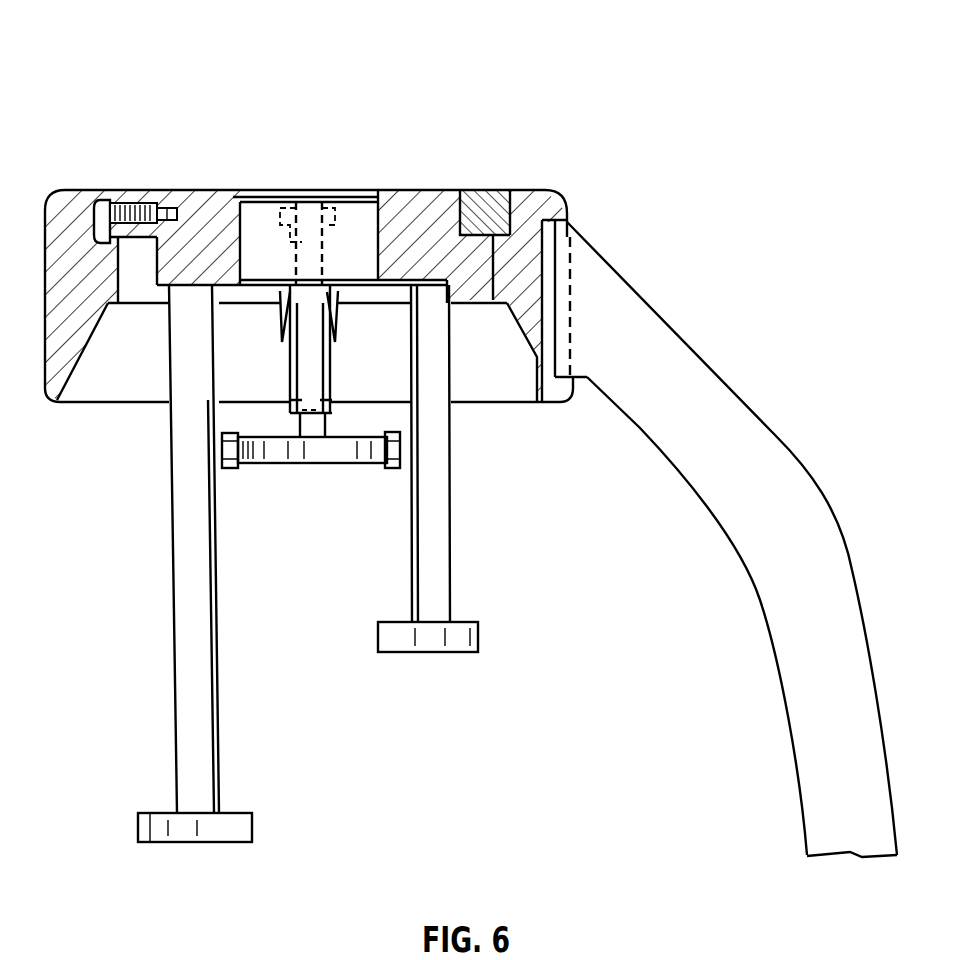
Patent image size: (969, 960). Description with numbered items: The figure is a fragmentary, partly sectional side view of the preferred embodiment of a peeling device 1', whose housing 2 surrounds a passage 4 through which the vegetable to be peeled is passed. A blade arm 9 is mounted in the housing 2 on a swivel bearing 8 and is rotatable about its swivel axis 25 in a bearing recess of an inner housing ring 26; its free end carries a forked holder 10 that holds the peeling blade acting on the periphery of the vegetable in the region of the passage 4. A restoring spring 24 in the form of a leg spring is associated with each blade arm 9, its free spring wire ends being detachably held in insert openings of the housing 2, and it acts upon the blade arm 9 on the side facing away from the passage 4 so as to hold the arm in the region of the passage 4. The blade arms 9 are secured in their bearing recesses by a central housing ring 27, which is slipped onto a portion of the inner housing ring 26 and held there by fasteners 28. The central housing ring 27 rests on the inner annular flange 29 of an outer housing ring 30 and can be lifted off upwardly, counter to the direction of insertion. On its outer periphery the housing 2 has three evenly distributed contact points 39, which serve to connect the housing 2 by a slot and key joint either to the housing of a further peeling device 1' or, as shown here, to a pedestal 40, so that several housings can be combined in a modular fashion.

The peeling device 1' is at (467, 437).
The housing 2 is at (530, 160).
The passage 4 is at (363, 190).
The swivel bearing 8 is at (300, 168).
The blade arm 9 is at (278, 190).
The forked holder 10 is at (307, 478).
The restoring spring 24 is at (340, 327).
The swivel axis 25 is at (338, 190).
The inner housing ring 26 is at (430, 203).
The central housing ring 27 is at (484, 190).
The fastener 28 is at (140, 204).
The inner annular flange 29 is at (98, 242).
The outer housing ring 30 is at (67, 368).
The contact point 39 is at (570, 262).
The pedestal 40 is at (753, 433).